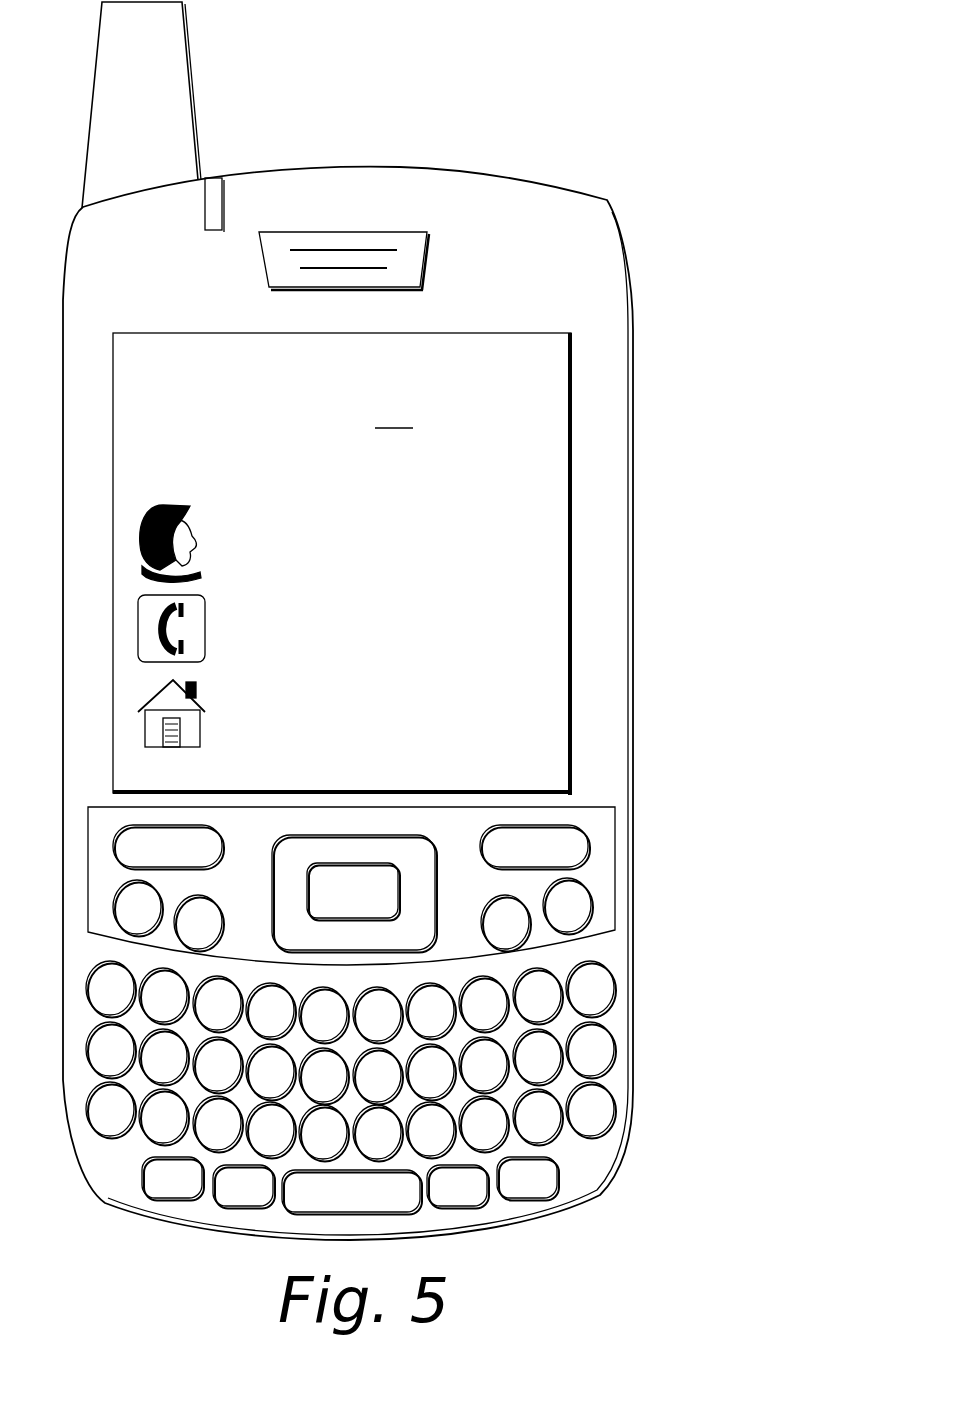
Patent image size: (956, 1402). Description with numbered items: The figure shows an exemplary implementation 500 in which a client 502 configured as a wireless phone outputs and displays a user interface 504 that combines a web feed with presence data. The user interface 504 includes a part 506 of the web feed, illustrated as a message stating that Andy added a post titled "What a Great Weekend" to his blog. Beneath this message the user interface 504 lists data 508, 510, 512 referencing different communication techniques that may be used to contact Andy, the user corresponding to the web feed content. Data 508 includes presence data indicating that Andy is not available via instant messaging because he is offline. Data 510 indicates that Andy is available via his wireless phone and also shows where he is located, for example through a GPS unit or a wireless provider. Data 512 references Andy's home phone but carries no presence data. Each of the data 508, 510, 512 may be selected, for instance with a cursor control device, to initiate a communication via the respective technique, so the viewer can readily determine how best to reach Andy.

The exemplary implementation 500 is at (563, 100).
The client 502 is at (607, 200).
The user interface 504 is at (553, 372).
The part of the web feed 506 is at (202, 388).
The data 508 is at (360, 520).
The data 510 is at (360, 604).
The data 512 is at (360, 696).